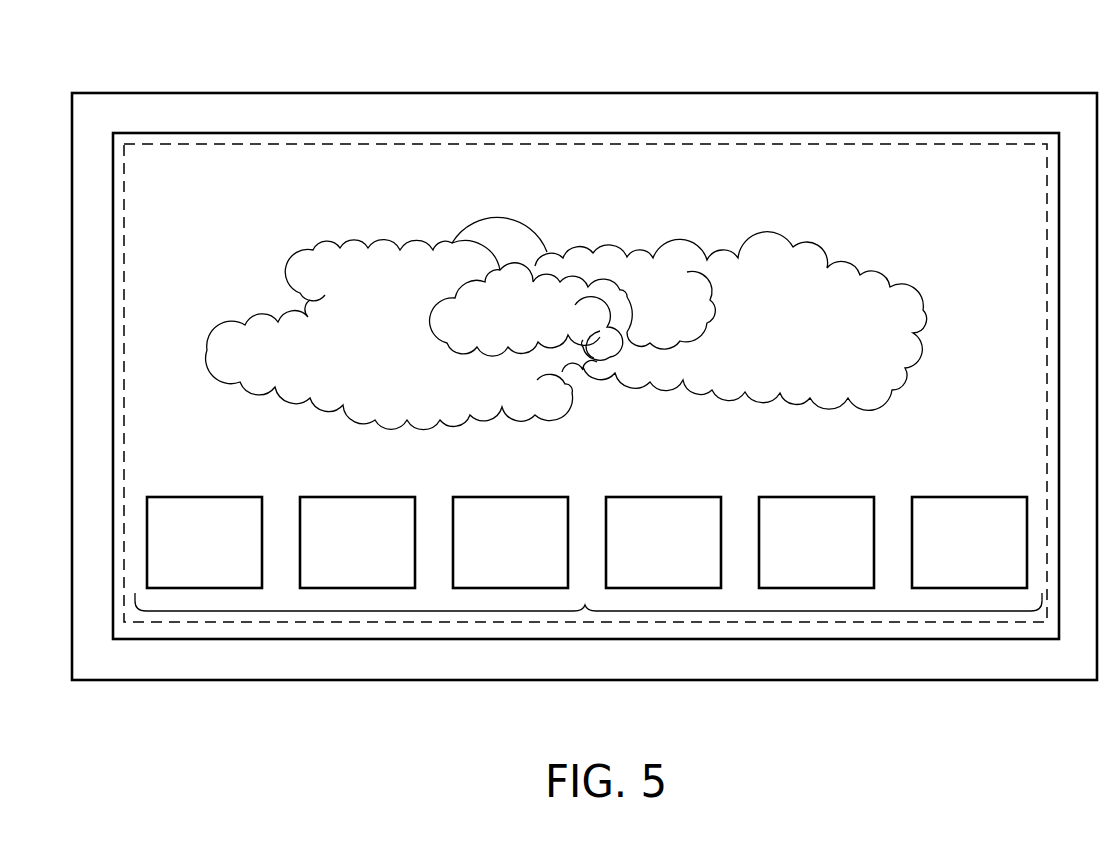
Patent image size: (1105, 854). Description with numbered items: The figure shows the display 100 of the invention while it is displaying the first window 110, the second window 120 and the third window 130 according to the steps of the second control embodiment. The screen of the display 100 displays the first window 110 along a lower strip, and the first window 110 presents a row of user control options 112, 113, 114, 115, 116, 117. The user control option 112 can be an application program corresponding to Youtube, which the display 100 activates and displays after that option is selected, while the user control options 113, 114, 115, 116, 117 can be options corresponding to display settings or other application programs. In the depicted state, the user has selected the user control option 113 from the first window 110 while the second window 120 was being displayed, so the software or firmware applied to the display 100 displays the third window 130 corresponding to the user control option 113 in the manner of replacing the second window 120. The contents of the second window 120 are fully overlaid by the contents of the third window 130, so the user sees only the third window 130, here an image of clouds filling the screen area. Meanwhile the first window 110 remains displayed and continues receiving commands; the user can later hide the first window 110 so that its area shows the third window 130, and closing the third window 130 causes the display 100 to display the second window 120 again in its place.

The display 100 is at (1037, 100).
The first window 110 is at (588, 608).
The user control option 112 is at (179, 555).
The user control option 113 is at (332, 555).
The user control option 114 is at (485, 555).
The user control option 115 is at (638, 555).
The user control option 116 is at (791, 555).
The user control option 117 is at (944, 555).
The second window 120 is at (413, 145).
The third window 130 is at (260, 173).